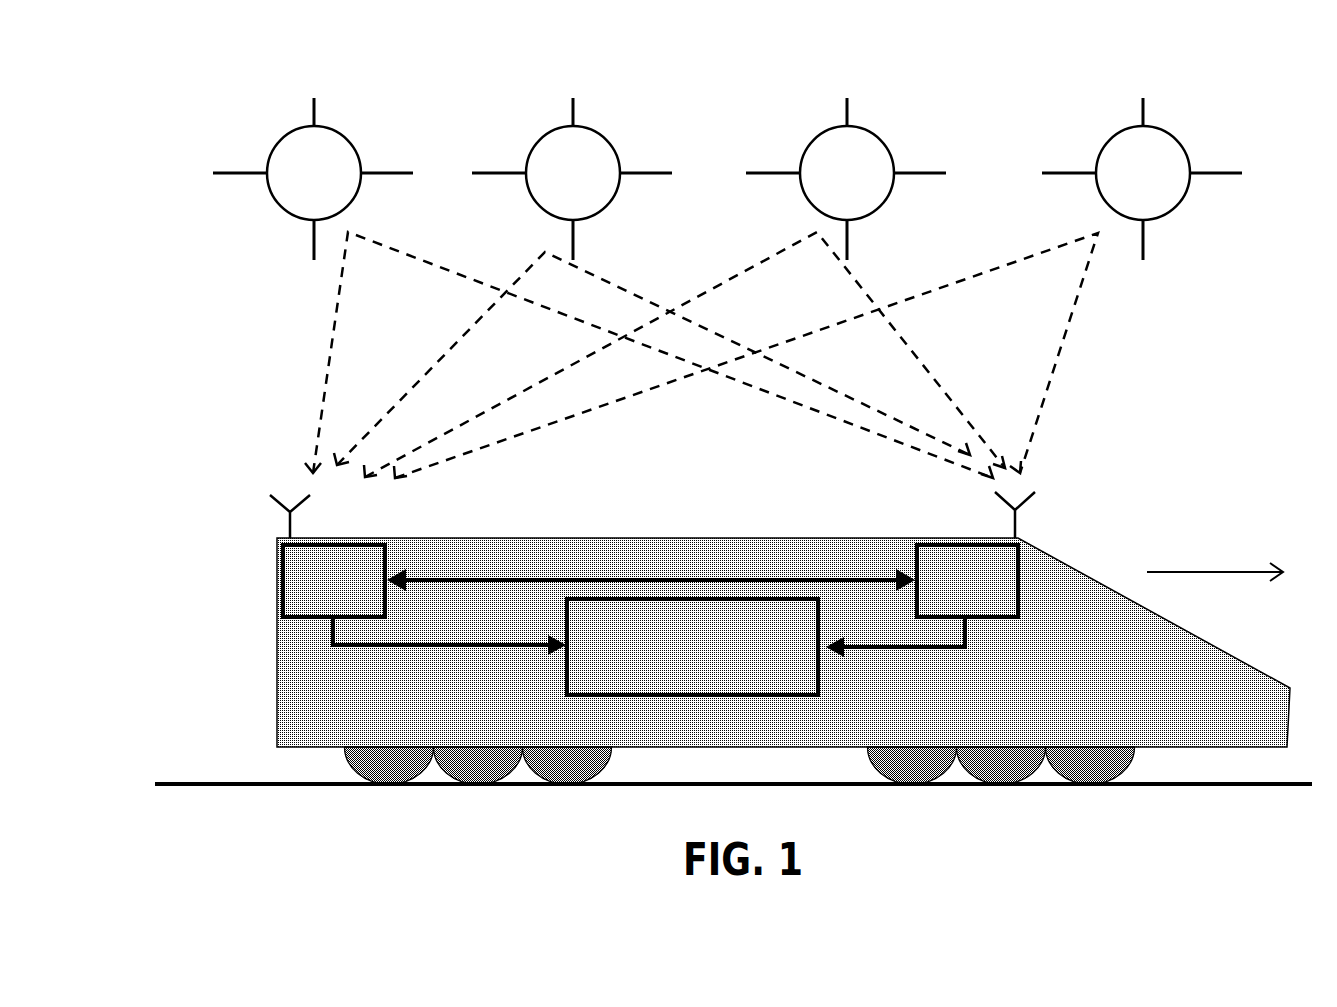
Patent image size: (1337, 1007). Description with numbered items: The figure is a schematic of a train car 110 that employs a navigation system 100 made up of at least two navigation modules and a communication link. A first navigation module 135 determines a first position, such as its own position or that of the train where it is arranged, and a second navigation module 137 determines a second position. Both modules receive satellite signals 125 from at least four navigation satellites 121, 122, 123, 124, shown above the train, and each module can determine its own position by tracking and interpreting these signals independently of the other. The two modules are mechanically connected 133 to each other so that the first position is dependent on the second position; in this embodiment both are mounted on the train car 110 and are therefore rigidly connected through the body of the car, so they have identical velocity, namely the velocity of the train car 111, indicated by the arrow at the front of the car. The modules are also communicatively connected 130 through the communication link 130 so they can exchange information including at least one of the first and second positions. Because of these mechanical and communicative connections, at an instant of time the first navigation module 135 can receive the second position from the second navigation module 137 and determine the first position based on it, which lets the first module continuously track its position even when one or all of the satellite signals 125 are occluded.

The navigation system 100 is at (733, 618).
The train car 110 is at (693, 537).
The velocity of the train car 111 is at (1197, 572).
The navigation satellite 121 is at (285, 137).
The navigation satellite 122 is at (544, 137).
The navigation satellite 123 is at (818, 137).
The navigation satellite 124 is at (1114, 137).
The satellite signals 125 is at (1063, 327).
The communication link 130 is at (760, 598).
The mechanical connection 133 is at (565, 573).
The first navigation module 135 is at (277, 585).
The second navigation module 137 is at (1042, 558).